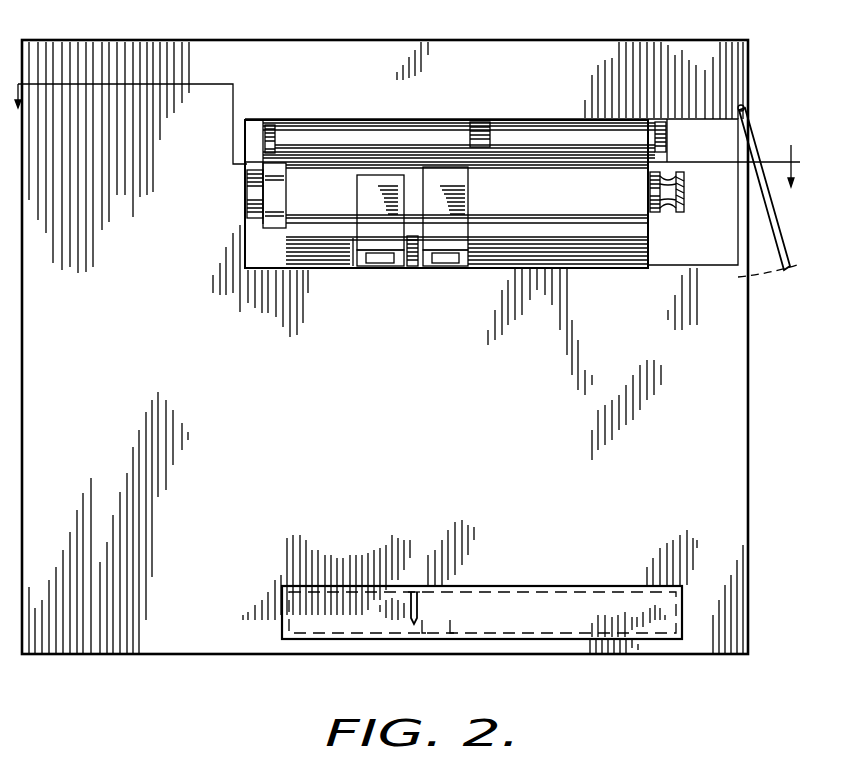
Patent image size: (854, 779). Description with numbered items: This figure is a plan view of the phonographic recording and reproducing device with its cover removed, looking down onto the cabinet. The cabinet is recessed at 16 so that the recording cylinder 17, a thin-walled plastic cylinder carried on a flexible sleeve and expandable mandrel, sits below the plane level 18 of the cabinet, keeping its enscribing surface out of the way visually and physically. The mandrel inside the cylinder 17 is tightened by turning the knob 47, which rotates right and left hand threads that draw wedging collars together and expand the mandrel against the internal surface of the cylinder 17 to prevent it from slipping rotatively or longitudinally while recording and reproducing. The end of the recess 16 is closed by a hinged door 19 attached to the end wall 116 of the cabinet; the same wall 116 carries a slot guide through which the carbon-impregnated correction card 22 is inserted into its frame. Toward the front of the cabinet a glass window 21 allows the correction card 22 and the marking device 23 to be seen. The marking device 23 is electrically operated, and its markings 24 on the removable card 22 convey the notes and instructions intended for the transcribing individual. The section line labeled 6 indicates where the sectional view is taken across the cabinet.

The end wall 116 is at (752, 78).
The plane level 18 is at (172, 636).
The section line 6- 6 is at (407, 147).
The recess 16 is at (491, 192).
The recording cylinder 17 is at (590, 248).
The knob 47 is at (686, 192).
The hinged door 19 is at (783, 275).
The correction card 22 is at (538, 615).
The glass window 21 is at (350, 622).
The marking device 23 is at (412, 620).
The markings 24 is at (448, 630).